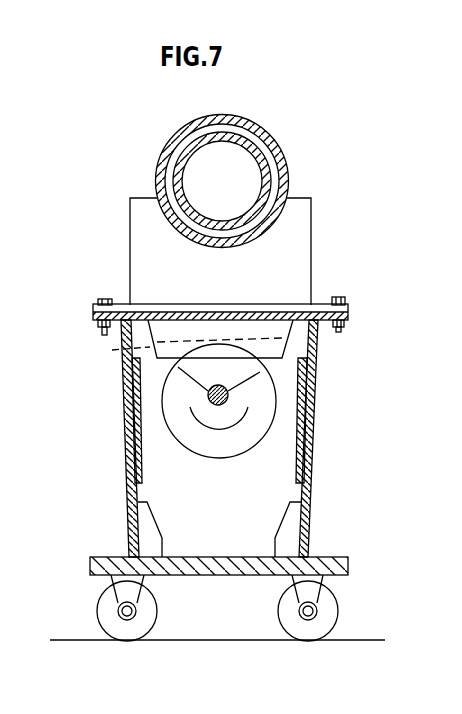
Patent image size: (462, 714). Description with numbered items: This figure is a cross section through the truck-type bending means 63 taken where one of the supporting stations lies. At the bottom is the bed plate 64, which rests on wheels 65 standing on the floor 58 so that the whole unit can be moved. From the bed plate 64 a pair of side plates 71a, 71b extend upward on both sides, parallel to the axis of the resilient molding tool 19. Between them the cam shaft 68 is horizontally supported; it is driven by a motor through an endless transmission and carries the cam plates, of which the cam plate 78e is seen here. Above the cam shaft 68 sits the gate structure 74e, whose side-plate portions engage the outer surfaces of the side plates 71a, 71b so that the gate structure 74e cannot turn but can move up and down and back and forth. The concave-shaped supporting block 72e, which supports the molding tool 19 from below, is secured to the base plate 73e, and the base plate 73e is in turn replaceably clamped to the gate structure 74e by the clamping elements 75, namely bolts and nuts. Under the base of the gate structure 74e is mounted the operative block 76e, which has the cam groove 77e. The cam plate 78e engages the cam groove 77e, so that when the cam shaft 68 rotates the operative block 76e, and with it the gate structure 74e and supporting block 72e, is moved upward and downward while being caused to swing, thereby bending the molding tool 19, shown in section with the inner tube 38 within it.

The resilient molding tool 19 is at (286, 161).
The inner tube 38 is at (253, 146).
The concave-shaped supporting block 72e is at (309, 250).
The base plate 73e is at (298, 308).
The clamping elements 75 is at (102, 300).
The bending means 63 is at (254, 434).
The side plate 71a is at (127, 467).
The side plate 71b is at (311, 470).
The gate structure 74e is at (316, 392).
The cam groove 77e is at (122, 353).
The operative block 76e is at (292, 332).
The cam plate 78e is at (243, 441).
The cam shaft 68 is at (212, 403).
The bed plate 64 is at (347, 565).
The casters 65 is at (138, 623).
The floor 58 is at (87, 637).